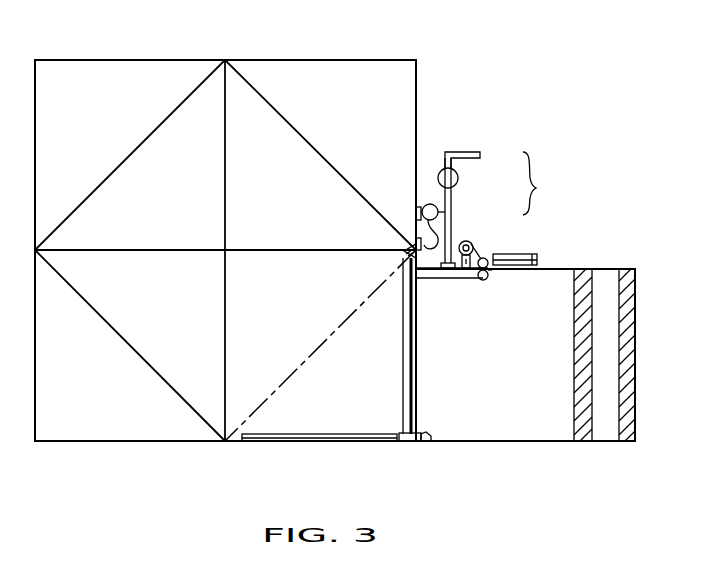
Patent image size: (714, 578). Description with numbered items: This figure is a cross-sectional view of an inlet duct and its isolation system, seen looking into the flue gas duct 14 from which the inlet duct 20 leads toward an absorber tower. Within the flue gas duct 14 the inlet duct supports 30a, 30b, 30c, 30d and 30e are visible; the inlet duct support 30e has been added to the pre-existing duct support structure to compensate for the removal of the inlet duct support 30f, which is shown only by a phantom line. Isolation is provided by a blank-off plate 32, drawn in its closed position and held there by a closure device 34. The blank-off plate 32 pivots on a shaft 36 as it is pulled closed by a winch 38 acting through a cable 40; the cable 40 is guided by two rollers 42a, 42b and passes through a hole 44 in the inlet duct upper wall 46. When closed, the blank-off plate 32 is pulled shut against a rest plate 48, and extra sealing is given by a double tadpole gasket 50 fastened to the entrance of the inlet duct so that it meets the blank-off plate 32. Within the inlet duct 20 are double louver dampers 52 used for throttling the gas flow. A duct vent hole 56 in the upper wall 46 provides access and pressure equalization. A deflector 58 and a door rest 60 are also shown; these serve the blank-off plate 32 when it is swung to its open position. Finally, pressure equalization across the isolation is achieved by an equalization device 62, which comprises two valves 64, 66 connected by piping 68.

The flue gas duct 14 is at (259, 295).
The inlet duct 20 is at (503, 392).
The inlet duct support 30a is at (300, 133).
The inlet duct support 30b is at (163, 122).
The inlet duct support 30c is at (150, 378).
The inlet duct support 30d is at (224, 170).
The inlet duct support 30e is at (290, 250).
The inlet duct support 30f is at (330, 348).
The blank-off plate 32 is at (404, 358).
The closure device 34 is at (413, 238).
The shaft 36 is at (404, 442).
The winch 38 is at (466, 270).
The cable 40 is at (430, 279).
The roller 42a is at (484, 258).
The roller 42b is at (484, 280).
The hole 44 is at (492, 272).
The inlet duct upper wall 46 is at (558, 269).
The rest plate 48 is at (428, 436).
The double tadpole gasket 50 is at (413, 356).
The double louver dampers 52 is at (628, 268).
The duct vent hole 56 is at (533, 257).
The deflector 58 is at (358, 433).
The door rest 60 is at (247, 443).
The equalization device 62 is at (570, 200).
The valve 64 is at (424, 206).
The valve 66 is at (443, 169).
The piping 68 is at (455, 222).